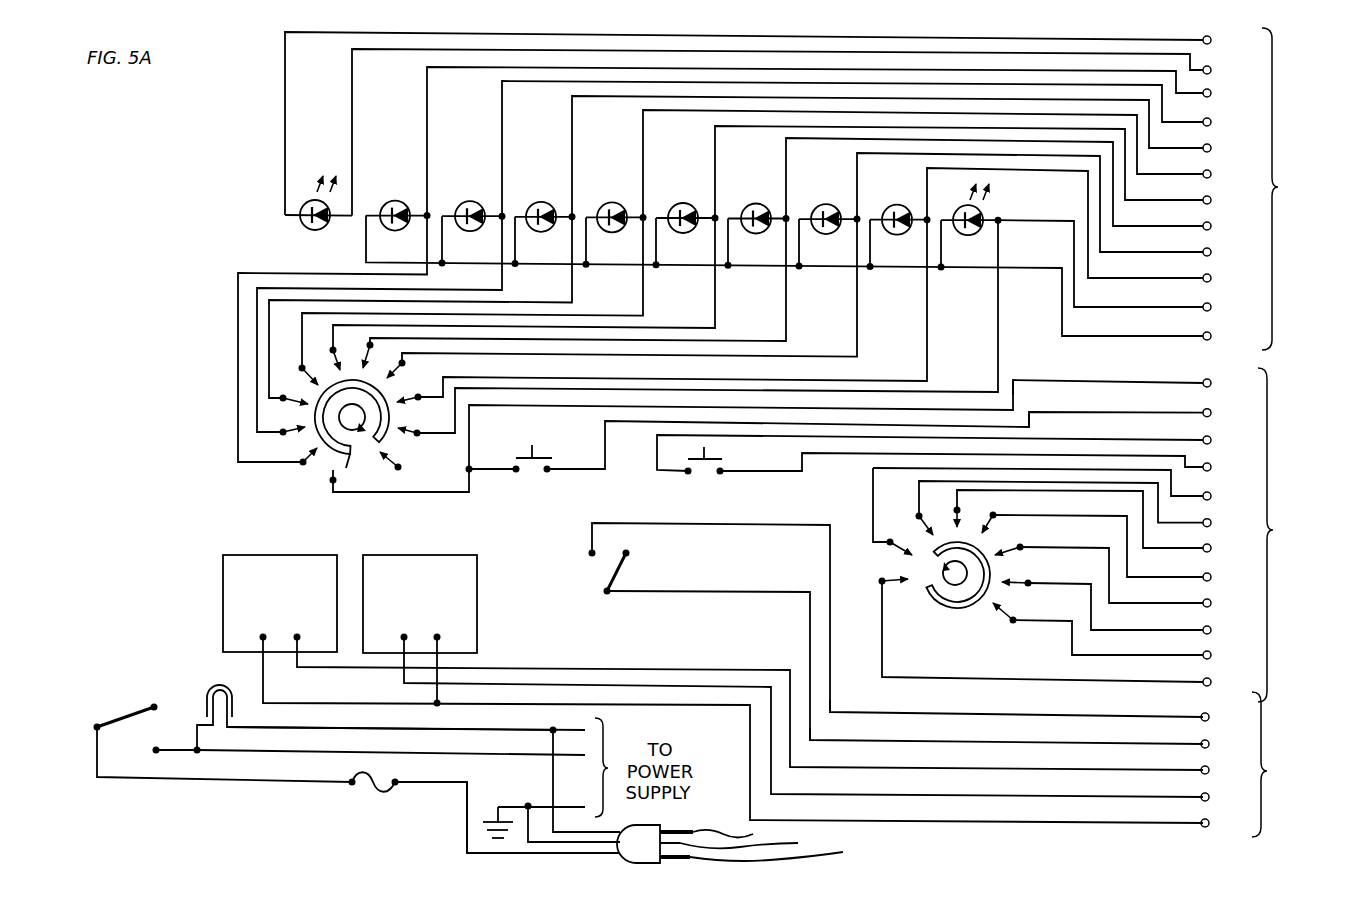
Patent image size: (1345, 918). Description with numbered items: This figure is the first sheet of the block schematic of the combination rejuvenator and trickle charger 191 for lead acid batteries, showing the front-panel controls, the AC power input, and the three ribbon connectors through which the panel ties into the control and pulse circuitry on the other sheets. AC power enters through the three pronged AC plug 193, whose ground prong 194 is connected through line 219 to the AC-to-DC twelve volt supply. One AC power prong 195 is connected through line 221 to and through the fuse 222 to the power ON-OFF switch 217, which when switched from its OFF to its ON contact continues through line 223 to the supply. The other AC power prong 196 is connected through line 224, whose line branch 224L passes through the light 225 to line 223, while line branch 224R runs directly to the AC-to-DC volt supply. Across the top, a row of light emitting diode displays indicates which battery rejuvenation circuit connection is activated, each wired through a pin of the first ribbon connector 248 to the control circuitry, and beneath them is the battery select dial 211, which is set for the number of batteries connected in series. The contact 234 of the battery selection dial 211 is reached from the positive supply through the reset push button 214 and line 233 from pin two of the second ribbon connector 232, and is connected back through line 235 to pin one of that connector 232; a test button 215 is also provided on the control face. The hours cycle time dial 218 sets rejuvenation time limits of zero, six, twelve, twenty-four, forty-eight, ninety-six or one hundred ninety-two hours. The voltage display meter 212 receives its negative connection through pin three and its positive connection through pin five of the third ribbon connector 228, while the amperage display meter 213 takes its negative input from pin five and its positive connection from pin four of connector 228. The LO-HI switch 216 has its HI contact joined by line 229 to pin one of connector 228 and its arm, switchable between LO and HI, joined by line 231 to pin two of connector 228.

The combination rejuvenator and trickle charger 191 is at (243, 153).
The No. 1 ribbon connector 248 is at (1263, 337).
The No. 2 ribbon connector 232 is at (1265, 402).
The No. 3 ribbon connector 228 is at (1268, 712).
The battery select dial 211 is at (349, 460).
The contact of battery selection dial 234 is at (333, 468).
The line 235 is at (1062, 381).
The line 233 is at (1093, 412).
The reset button 214 is at (538, 447).
The test button 215 is at (708, 452).
The hours cycle time dial 218 is at (978, 603).
The voltage display meter 212 is at (223, 556).
The amperage display meter 213 is at (478, 628).
The LO-HI switch 216 is at (616, 578).
The line 229 is at (1017, 714).
The line 231 is at (1046, 739).
The power ON-OFF switch 217 is at (125, 689).
The light 225 is at (207, 688).
The fuse 222 is at (355, 790).
The line 223 is at (278, 758).
The line branch 224L is at (297, 727).
The line branch 224R is at (567, 728).
The line 224 is at (552, 768).
The line 219 is at (566, 806).
The line 221 is at (465, 813).
The three pronged AC plug 193 is at (652, 826).
The AC power prong 196 is at (741, 831).
The ground prong 194 is at (755, 841).
The AC power prong 195 is at (782, 848).